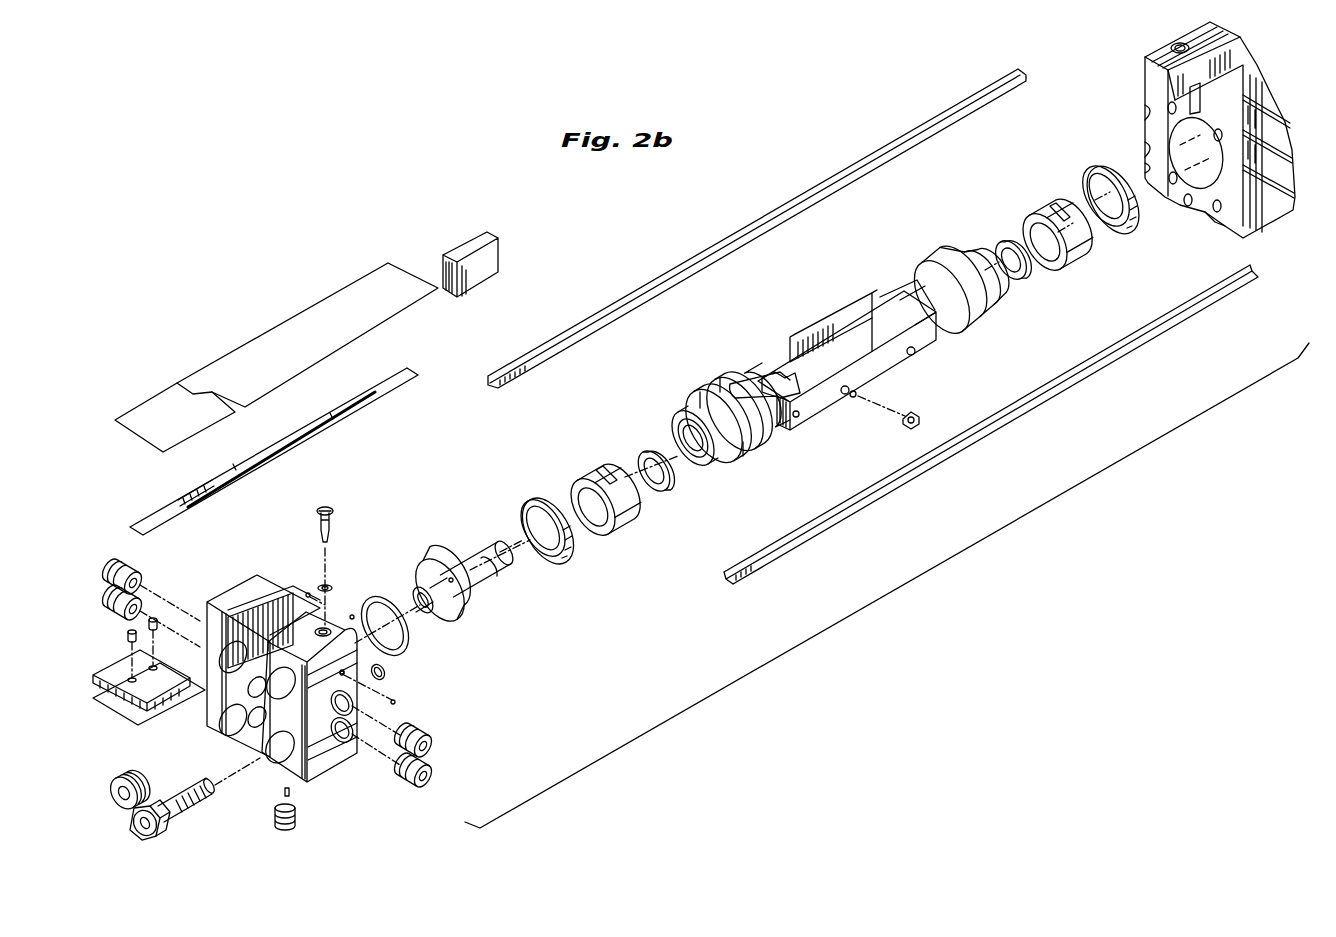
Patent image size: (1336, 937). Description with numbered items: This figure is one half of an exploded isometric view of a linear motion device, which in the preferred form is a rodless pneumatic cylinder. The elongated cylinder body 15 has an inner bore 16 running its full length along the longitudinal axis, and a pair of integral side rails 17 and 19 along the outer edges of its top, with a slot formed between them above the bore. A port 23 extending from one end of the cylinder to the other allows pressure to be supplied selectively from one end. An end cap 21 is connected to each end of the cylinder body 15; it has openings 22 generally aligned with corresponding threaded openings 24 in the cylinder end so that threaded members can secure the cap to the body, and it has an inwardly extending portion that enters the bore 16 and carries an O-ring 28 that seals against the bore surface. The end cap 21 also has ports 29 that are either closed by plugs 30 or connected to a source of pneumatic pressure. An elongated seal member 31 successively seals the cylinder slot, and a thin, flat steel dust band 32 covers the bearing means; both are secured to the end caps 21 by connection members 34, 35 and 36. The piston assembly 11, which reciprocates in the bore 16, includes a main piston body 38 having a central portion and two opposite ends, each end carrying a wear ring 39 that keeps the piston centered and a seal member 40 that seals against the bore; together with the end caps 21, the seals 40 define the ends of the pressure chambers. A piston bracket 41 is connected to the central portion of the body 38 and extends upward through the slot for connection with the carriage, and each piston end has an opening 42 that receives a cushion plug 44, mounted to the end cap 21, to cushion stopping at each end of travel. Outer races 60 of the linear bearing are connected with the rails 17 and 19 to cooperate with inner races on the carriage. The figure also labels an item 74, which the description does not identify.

The piston assembly 11 is at (836, 378).
The cylinder body 15 is at (1222, 232).
The inner bore 16 is at (1183, 136).
The side rail 17 is at (1191, 143).
The side rail 19 is at (1272, 115).
The end cap 21 is at (292, 710).
The openings 22 is at (227, 670).
The port 23 is at (1188, 205).
The threaded openings 24 is at (1215, 211).
The O-ring 28 is at (366, 597).
The ports 29 is at (343, 740).
The plugs 30 is at (138, 567).
The seal member 31 is at (337, 418).
The dust band 32 is at (315, 305).
The connection member 34 is at (145, 720).
The connection member 35 is at (468, 243).
The connection member 36 is at (120, 683).
The main piston body 38 is at (824, 408).
The wear ring 39 is at (1068, 272).
The seal member 40 is at (1138, 220).
The piston bracket 41 is at (848, 312).
The opening 42 is at (690, 474).
The cushion plug 44 is at (482, 557).
The outer race 60 is at (623, 298).
The hole 74 is at (1178, 45).